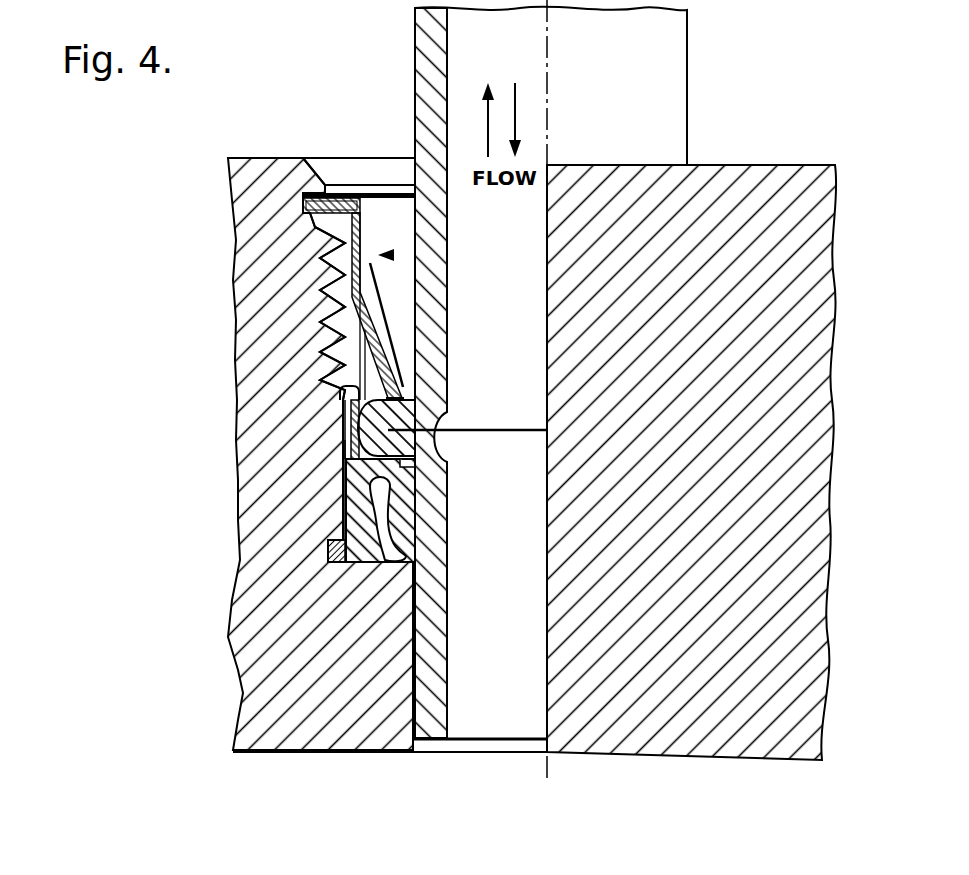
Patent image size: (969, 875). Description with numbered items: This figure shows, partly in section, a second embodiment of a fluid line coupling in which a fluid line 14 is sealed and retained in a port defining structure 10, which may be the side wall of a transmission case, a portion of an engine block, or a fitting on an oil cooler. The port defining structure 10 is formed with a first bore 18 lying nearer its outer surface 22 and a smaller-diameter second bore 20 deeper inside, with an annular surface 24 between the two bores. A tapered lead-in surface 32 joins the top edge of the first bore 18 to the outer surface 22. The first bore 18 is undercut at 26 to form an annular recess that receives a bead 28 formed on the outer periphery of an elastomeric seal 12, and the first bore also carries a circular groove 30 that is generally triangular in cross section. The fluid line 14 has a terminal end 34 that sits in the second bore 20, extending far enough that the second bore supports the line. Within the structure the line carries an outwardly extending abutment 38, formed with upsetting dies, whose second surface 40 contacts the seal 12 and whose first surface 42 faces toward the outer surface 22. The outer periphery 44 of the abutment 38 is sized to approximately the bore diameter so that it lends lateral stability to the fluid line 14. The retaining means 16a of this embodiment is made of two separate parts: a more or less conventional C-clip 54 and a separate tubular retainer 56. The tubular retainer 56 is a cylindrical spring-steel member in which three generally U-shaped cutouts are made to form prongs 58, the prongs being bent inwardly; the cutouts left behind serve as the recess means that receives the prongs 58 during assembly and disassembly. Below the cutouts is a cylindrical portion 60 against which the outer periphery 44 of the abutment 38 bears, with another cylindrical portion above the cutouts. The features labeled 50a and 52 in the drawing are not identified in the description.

The port defining structure 10 is at (243, 272).
The elastomeric seal 12 is at (410, 494).
The fluid line 14 is at (687, 73).
The retaining means 16a is at (392, 256).
The first bore 18 is at (345, 392).
The second bore 20 is at (414, 747).
The outer surface 22 is at (258, 158).
The annular surface 24 is at (405, 553).
The undercut 26 is at (330, 550).
The bead 28 is at (348, 562).
The circular groove 30 is at (303, 205).
The tapered lead-in surface 32 is at (313, 158).
The terminal end 34 is at (433, 745).
The outwardly extending abutment 38 is at (340, 447).
The second surface 40 is at (416, 465).
The first surface 42 is at (411, 398).
The outer periphery 44 is at (352, 437).
The sleeve end 50a is at (399, 388).
The spring rod 52 is at (360, 353).
The C-clip 54 is at (336, 193).
The tubular retainer 56 is at (364, 228).
The prongs 58 is at (381, 312).
The cylindrical portion 60 is at (355, 420).